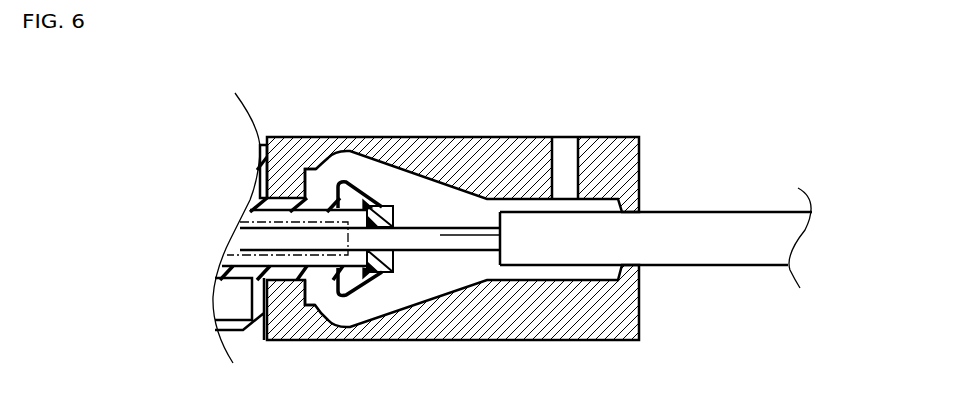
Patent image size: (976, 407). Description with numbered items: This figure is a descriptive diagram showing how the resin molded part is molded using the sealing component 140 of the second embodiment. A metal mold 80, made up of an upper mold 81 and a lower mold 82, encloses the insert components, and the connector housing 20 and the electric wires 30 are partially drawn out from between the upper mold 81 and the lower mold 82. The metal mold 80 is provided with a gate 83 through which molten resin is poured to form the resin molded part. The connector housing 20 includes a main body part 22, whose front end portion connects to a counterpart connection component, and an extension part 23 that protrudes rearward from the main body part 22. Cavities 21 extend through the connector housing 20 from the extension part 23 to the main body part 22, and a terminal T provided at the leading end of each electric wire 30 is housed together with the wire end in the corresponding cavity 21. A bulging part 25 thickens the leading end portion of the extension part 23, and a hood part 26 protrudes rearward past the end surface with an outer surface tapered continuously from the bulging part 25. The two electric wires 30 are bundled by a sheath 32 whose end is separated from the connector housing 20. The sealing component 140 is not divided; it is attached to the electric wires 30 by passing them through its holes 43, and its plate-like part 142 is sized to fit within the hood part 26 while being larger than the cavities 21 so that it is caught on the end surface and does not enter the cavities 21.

The connector housing 20 is at (242, 330).
The cavities 21 is at (333, 290).
The main body part 22 is at (262, 145).
The extension part 23 is at (314, 197).
The bulging part 25 is at (349, 182).
The hood part 26 is at (371, 275).
The electric wires 30 is at (455, 238).
The sheath 32 is at (730, 256).
The holes 43 is at (393, 258).
The metal mold 80 is at (453, 234).
The upper mold 81 is at (453, 206).
The lower mold 82 is at (453, 272).
The gate 83 is at (556, 160).
The sealing component 140 is at (393, 277).
The plate-like part 142 is at (394, 212).
The terminal T is at (235, 256).